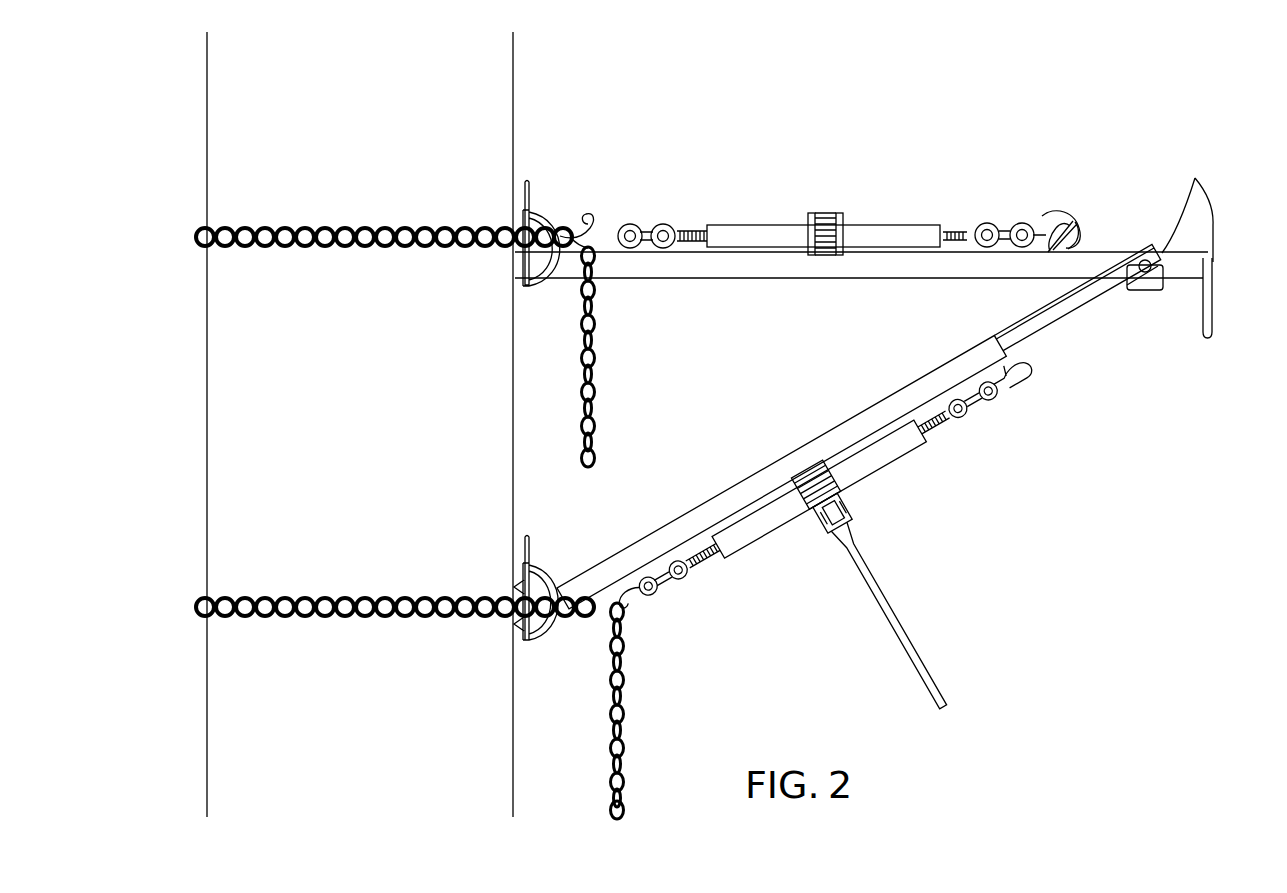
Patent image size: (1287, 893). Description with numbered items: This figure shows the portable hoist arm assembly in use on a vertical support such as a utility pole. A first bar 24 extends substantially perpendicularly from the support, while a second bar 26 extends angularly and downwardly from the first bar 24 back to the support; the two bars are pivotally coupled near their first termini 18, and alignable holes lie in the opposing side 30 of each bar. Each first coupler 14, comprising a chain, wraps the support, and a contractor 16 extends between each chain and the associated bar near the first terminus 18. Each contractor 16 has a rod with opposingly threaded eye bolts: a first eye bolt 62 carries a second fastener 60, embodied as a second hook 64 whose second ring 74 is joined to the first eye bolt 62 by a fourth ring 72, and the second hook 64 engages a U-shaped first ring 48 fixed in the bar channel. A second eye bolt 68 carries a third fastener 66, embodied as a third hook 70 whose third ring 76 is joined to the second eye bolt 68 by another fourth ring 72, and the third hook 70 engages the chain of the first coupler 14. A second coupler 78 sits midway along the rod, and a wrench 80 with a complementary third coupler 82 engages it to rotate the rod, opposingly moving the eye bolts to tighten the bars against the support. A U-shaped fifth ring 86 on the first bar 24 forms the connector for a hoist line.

The first coupler 14 is at (406, 597).
The contractor 16 is at (777, 517).
The first terminus 18 is at (1188, 205).
The first bar 24 is at (892, 265).
The second bar 26 is at (905, 393).
The opposing side 30 is at (1103, 262).
The first ring 48 is at (1045, 352).
The second fastener 60 is at (1080, 230).
The first eye bolt 62 is at (984, 222).
The second hook 64 is at (1064, 214).
The third fastener 66 is at (584, 212).
The second eye bolt 68 is at (665, 222).
The third hook 70 is at (538, 208).
The fourth ring 72 is at (630, 222).
The second ring 74 is at (990, 400).
The third ring 76 is at (655, 598).
The second coupler 78 is at (826, 213).
The wrench 80 is at (905, 640).
The third coupler 82 is at (852, 522).
The fifth ring 86 is at (1210, 315).